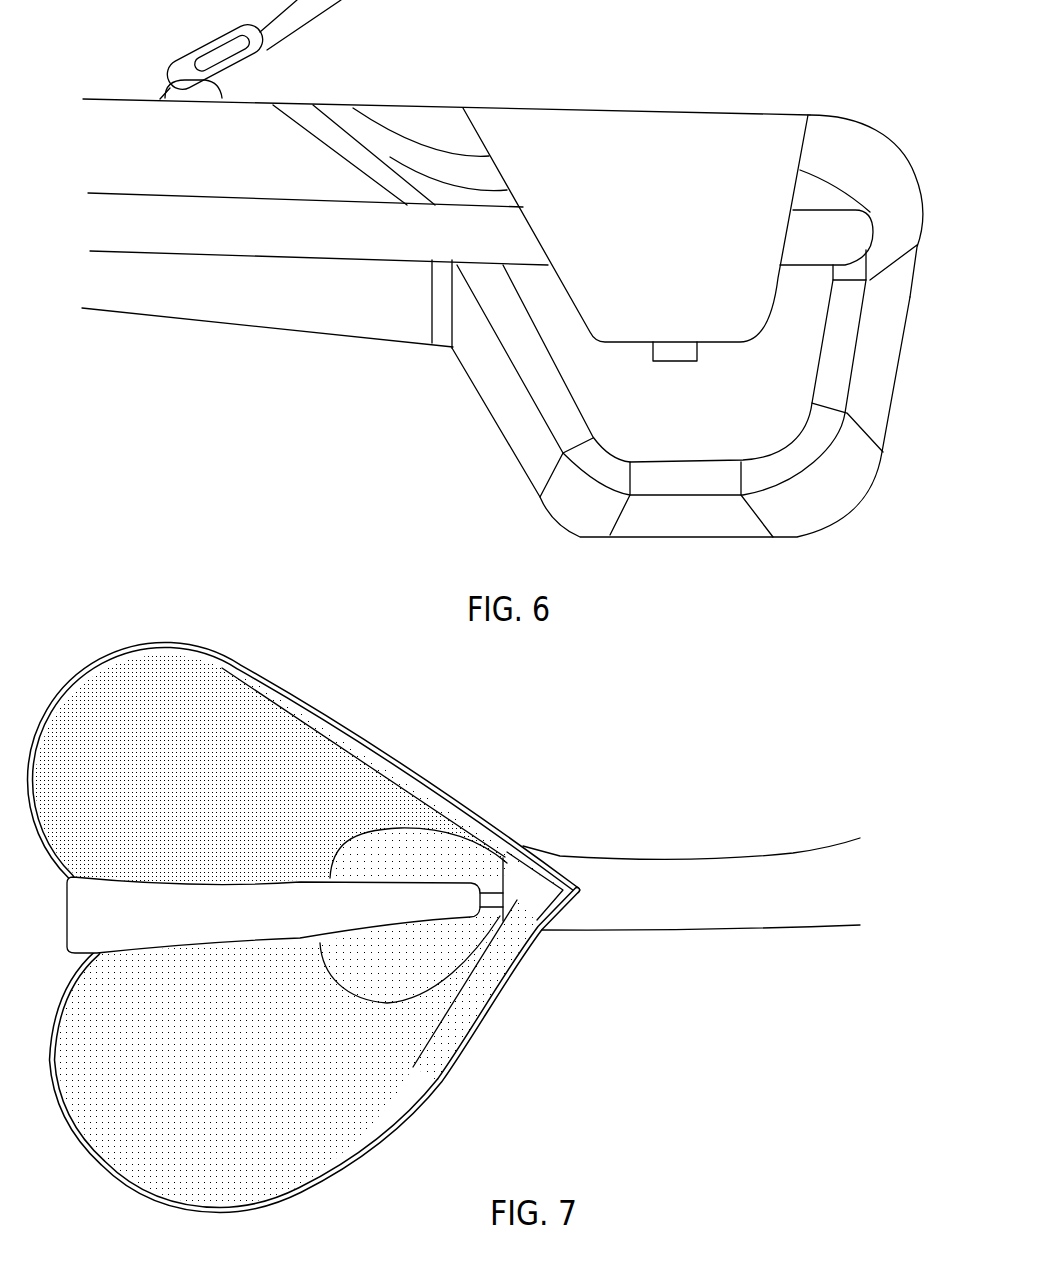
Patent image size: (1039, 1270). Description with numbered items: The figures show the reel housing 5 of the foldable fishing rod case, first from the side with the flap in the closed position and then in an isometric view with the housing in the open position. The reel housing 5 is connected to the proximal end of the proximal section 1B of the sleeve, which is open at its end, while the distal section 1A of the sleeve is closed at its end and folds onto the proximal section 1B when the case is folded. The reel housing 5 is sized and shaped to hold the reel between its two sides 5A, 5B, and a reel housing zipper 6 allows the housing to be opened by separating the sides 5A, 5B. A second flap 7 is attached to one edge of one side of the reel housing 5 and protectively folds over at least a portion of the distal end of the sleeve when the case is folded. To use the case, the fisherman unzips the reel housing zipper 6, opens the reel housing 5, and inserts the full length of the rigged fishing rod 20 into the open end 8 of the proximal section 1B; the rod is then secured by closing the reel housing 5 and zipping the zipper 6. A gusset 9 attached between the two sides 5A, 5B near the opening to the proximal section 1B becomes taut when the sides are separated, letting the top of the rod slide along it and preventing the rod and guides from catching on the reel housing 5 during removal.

In FIG. 6, the distal section 1A is at (233, 240).
In FIG. 6, the proximal section 1B is at (145, 275).
In FIG. 7, the proximal section 1B is at (693, 898).
In FIG. 6, the reel housing 5 is at (860, 133).
In FIG. 7, the reel housing 5 is at (309, 872).
In FIG. 7, the side of reel housing 5A is at (237, 687).
In FIG. 7, the side of reel housing 5B is at (397, 1053).
In FIG. 6, the reel housing zipper 6 is at (297, 17).
In FIG. 7, the reel housing zipper 6 is at (393, 1127).
In FIG. 6, the second flap 7 is at (565, 163).
In FIG. 7, the open end 8 is at (453, 963).
In FIG. 7, the gusset 9 is at (533, 895).
In FIG. 7, the rigged fishing rod 20 is at (420, 908).